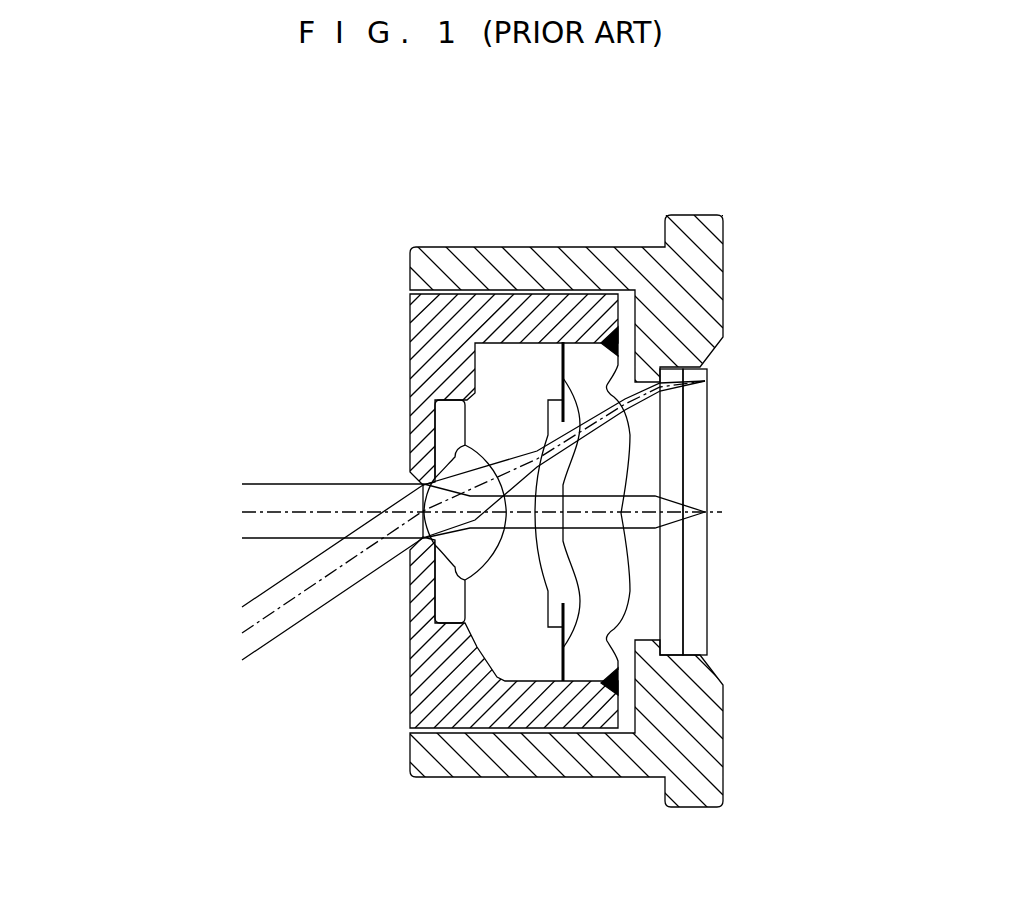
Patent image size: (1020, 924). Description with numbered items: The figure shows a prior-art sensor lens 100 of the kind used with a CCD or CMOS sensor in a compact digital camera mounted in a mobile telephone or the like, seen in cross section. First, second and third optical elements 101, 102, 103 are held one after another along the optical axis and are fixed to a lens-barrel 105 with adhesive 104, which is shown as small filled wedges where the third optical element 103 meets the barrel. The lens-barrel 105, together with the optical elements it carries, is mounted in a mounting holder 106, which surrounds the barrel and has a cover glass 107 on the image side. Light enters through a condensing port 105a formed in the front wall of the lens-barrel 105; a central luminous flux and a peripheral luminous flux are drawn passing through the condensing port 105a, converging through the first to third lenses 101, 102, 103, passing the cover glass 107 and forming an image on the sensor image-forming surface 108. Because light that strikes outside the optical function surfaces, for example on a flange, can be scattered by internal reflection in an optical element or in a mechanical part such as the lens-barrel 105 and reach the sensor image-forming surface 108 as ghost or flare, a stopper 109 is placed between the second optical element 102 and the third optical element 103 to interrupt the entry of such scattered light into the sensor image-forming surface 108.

The sensor lens 100 is at (340, 202).
The first optical element 101 is at (445, 609).
The second optical element 102 is at (514, 644).
The third optical element 103 is at (580, 651).
The adhesive 104 is at (617, 340).
The lens-barrel 105 is at (423, 685).
The condensing port 105a is at (391, 467).
The mounting holder 106 is at (700, 727).
The cover glass 107 is at (673, 620).
The sensor image-forming surface 108 is at (705, 427).
The stopper 109 is at (563, 378).